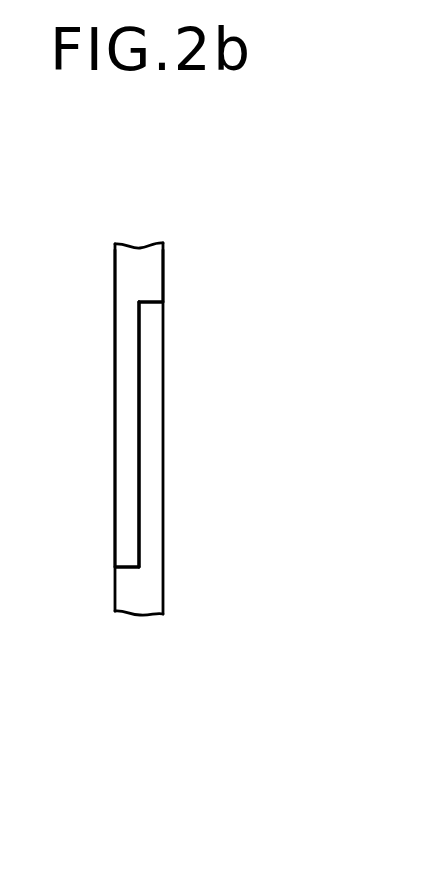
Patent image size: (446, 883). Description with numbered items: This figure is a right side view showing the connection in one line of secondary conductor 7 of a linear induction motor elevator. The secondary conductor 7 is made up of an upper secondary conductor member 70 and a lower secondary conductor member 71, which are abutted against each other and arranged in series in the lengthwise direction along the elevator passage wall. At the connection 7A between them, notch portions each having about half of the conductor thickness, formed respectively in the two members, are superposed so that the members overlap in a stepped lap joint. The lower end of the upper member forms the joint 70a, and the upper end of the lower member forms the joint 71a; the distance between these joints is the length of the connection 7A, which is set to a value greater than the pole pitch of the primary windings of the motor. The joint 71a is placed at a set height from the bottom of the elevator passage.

The secondary conductor 7 is at (142, 240).
The upper secondary conductor member 70 is at (157, 278).
The lower end (joint) of the upper secondary conductor member 70a is at (128, 567).
The lower secondary conductor member 71 is at (120, 596).
The upper end (joint) of the lower secondary conductor member 71a is at (145, 302).
The connection 7A is at (130, 427).